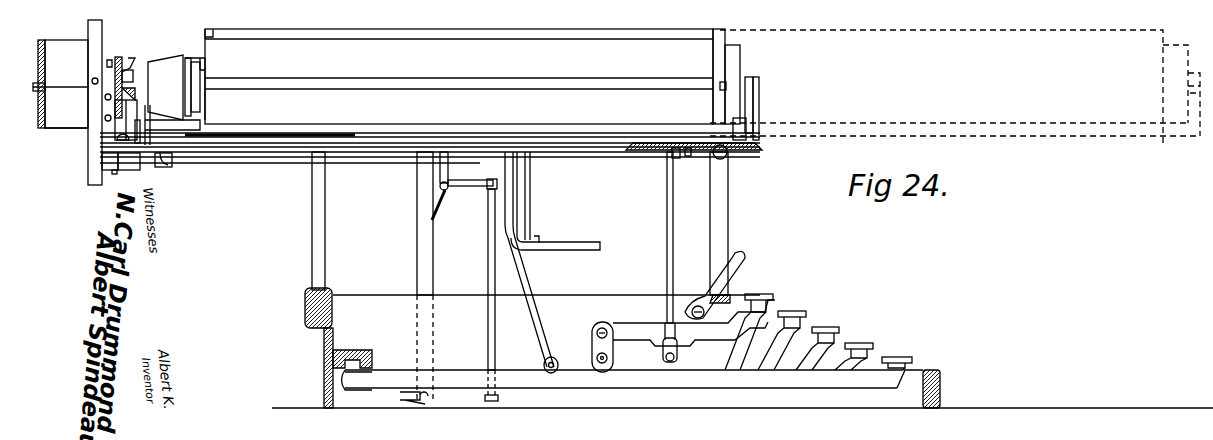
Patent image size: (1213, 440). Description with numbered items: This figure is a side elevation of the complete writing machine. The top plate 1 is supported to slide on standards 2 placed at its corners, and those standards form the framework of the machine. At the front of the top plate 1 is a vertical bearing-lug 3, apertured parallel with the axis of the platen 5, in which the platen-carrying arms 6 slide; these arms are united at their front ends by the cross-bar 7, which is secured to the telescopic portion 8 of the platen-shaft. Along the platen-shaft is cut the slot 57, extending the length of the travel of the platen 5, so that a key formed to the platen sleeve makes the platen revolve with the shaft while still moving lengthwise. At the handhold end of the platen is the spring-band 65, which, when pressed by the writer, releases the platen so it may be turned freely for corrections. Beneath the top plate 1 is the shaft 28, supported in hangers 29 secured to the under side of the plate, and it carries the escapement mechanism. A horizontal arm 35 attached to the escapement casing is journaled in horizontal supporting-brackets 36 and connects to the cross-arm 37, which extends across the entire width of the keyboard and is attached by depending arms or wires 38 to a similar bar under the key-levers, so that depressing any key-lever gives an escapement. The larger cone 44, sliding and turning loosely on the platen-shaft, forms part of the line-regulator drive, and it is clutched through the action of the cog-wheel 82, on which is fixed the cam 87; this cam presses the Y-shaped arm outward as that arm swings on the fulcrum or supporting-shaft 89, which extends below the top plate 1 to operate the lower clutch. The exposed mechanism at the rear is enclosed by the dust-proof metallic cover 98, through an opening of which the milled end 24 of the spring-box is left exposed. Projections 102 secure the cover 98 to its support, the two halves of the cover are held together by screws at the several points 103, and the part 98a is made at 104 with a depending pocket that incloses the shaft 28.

The top plate 1 is at (238, 148).
The standards 2 is at (326, 275).
The vertical bearing-lug 3 is at (750, 126).
The platen 5 is at (436, 62).
The platen-carrying arms 6 is at (402, 132).
The cross-bar 7 is at (759, 100).
The telescopic portion of the platen-shaft 8 is at (753, 79).
The milled end of the spring-box 24 is at (42, 42).
The shaft 28 is at (293, 158).
The hangers 29 is at (440, 172).
The horizontal arm 35 is at (475, 183).
The horizontal supporting-brackets 36 is at (446, 206).
The cross-arm 37 is at (483, 196).
The depending arms or wires 38 is at (490, 243).
The larger cone 44 is at (165, 87).
The slot 57 is at (172, 46).
The spring-band 65 is at (738, 62).
The cog-wheel 82 is at (93, 80).
The cam 87 is at (122, 72).
The fulcrum or supporting-shaft 89 is at (136, 118).
The dust-proof metallic cover 98 is at (67, 46).
The cover part 98a is at (66, 129).
The projections 102 is at (110, 60).
The points 103 is at (93, 92).
The depending pocket location 104 is at (95, 183).